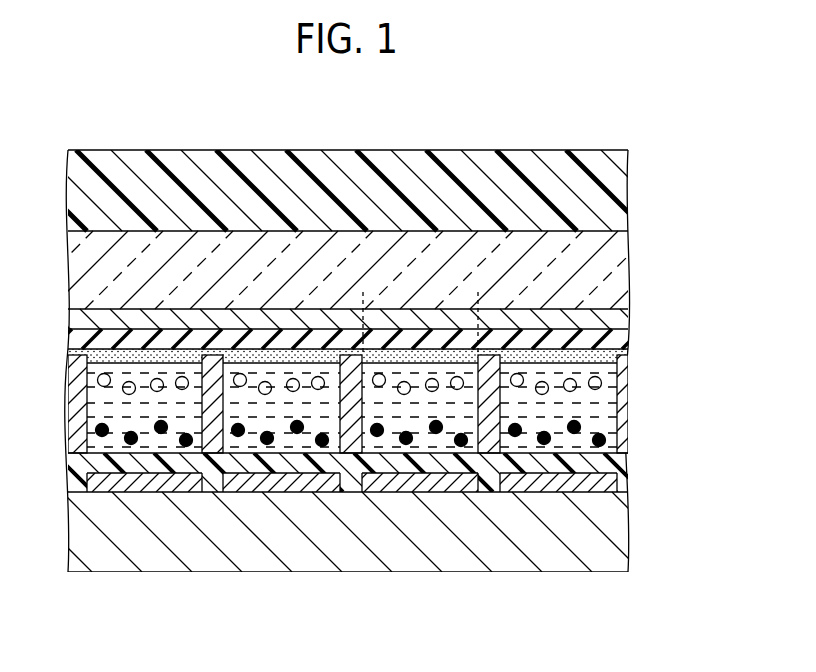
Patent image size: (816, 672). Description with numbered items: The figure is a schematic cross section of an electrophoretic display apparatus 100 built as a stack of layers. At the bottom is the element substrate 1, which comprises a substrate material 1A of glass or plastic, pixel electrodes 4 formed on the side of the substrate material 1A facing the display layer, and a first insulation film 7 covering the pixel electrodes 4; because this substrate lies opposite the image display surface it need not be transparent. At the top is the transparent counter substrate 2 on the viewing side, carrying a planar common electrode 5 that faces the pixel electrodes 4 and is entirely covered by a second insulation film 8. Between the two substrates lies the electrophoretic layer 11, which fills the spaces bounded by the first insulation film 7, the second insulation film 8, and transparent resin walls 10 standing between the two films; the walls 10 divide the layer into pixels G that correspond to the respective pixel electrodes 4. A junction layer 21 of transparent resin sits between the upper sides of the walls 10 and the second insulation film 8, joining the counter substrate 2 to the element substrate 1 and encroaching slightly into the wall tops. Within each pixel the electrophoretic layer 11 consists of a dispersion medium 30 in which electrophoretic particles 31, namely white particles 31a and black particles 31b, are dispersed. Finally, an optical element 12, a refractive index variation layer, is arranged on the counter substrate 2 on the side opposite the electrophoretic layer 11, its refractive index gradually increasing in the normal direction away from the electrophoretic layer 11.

The electrophoretic display apparatus 100 is at (609, 122).
The optical element 12 is at (358, 190).
The counter substrate 2 is at (344, 270).
The common electrode 5 is at (345, 319).
The second insulation film 8 is at (347, 339).
The junction layer 21 is at (348, 356).
The walls 10 is at (615, 406).
The electrophoretic layer 11 is at (367, 506).
The first insulation film 7 is at (622, 460).
The pixel electrodes 4 is at (527, 482).
The element substrate 1 is at (368, 547).
The substrate material 1A is at (350, 532).
The dispersion medium 30 is at (255, 412).
The electrophoretic particles 31 is at (351, 519).
The white particles 31a is at (319, 391).
The black particles 31b is at (297, 434).
The pixels G is at (478, 292).